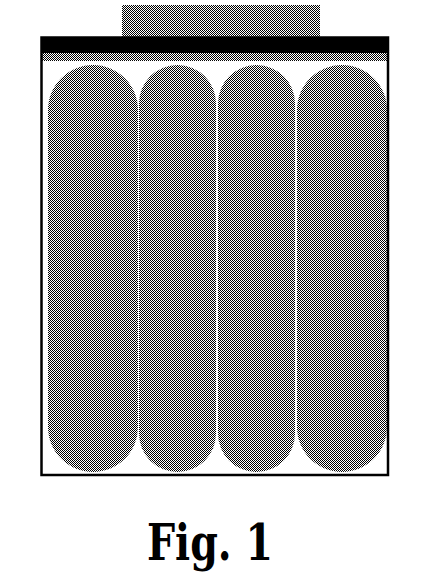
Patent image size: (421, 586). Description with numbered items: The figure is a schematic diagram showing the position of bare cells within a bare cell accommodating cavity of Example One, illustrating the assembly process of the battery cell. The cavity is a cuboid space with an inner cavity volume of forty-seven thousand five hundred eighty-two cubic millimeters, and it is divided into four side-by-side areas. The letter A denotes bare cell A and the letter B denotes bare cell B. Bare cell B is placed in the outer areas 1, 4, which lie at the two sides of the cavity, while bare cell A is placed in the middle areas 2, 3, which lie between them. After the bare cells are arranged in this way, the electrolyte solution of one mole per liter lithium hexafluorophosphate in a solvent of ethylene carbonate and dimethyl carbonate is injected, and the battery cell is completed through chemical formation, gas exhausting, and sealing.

The outer area 1 is at (93, 268).
The middle area 2 is at (177, 268).
The middle area 3 is at (256, 268).
The outer area 4 is at (342, 268).